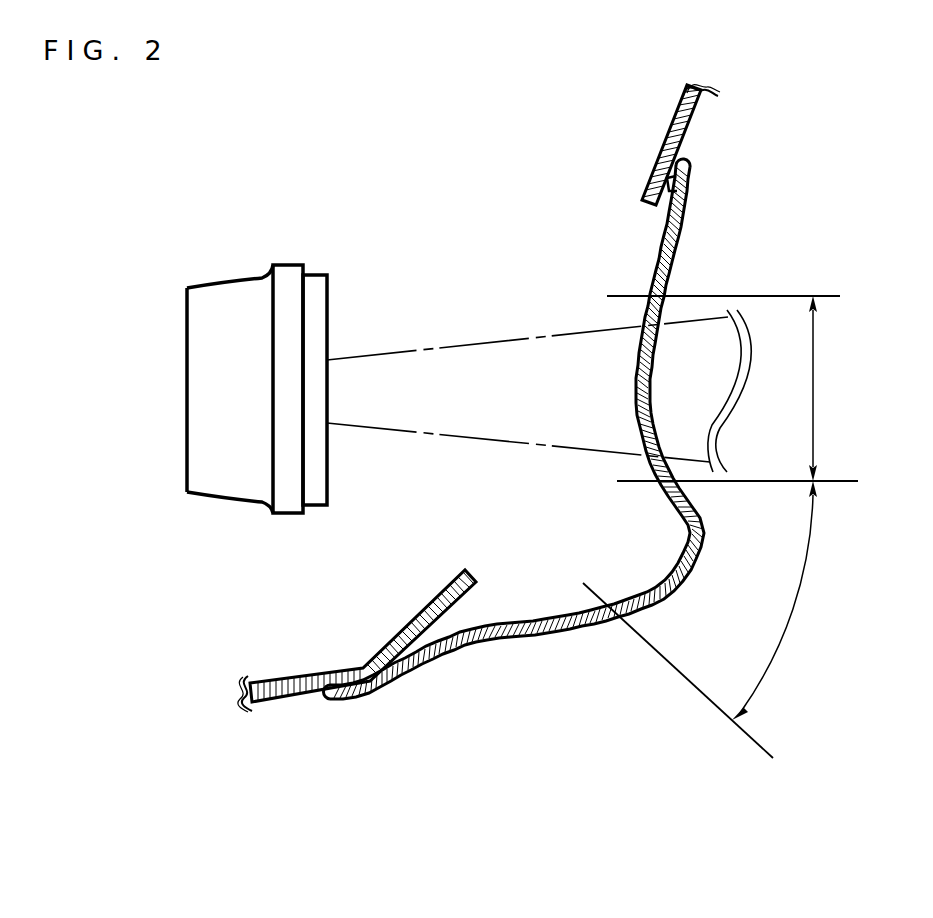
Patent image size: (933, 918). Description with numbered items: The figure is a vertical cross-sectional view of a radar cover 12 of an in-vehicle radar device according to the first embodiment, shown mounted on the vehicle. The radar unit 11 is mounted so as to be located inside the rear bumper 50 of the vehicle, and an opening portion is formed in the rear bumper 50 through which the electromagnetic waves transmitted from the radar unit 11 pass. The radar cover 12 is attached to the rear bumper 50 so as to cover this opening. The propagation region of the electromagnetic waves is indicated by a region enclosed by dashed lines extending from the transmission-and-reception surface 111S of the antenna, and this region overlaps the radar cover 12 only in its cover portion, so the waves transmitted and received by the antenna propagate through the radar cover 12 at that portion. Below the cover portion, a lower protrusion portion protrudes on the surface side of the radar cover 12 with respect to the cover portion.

The radar unit 11 is at (244, 256).
The transmission-and-reception surface 111S is at (328, 297).
The rear bumper 50 is at (693, 127).
The radar cover 12 is at (562, 622).